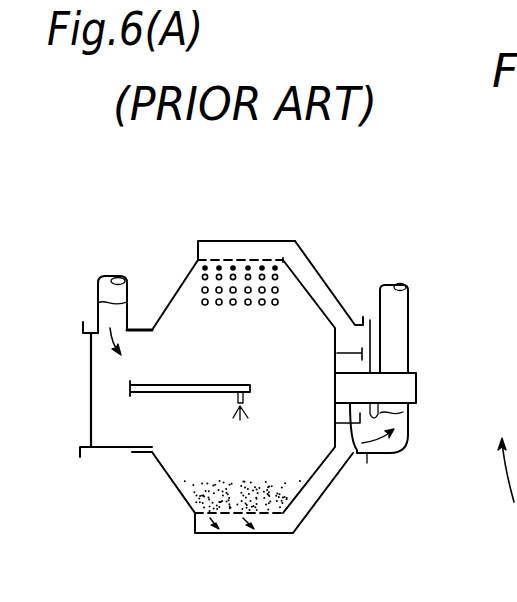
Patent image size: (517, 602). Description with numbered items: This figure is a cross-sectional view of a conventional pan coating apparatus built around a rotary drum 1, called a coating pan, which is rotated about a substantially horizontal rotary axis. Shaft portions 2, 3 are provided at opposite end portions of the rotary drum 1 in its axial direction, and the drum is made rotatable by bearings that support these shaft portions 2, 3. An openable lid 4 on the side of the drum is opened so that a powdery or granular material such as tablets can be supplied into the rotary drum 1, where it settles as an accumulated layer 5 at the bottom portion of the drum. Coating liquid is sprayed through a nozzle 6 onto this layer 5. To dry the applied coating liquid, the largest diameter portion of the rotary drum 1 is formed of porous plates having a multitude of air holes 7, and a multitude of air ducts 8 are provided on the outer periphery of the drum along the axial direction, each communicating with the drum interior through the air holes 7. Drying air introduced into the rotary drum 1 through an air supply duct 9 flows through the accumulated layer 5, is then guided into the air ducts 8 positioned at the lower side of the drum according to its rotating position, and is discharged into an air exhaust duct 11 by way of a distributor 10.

The rotary drum 1 is at (297, 276).
The shaft portion 2 is at (137, 455).
The shaft portion 3 is at (360, 453).
The openable lid 4 is at (91, 378).
The layer of powdery or granular material 5 is at (183, 503).
The nozzle 6 is at (245, 397).
The air holes 7 is at (250, 262).
The air ducts 8 is at (217, 248).
The air supply duct 9 is at (127, 292).
The distributor 10 is at (370, 342).
The air exhaust duct 11 is at (400, 350).